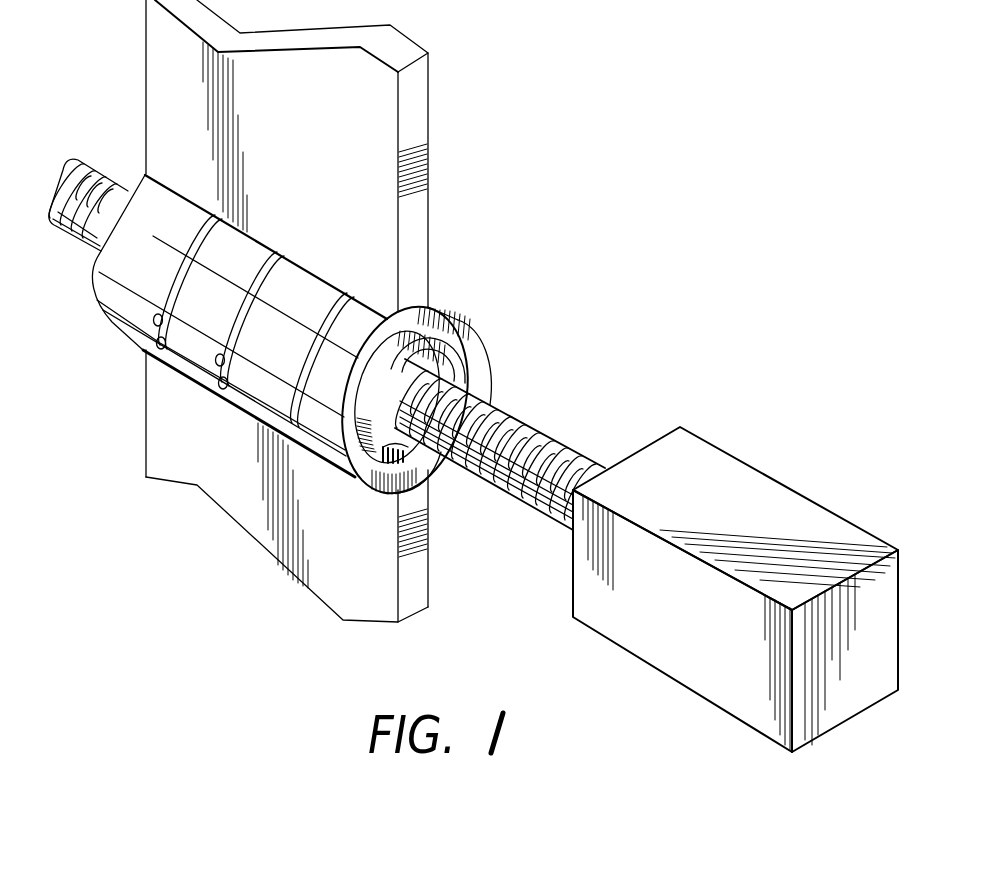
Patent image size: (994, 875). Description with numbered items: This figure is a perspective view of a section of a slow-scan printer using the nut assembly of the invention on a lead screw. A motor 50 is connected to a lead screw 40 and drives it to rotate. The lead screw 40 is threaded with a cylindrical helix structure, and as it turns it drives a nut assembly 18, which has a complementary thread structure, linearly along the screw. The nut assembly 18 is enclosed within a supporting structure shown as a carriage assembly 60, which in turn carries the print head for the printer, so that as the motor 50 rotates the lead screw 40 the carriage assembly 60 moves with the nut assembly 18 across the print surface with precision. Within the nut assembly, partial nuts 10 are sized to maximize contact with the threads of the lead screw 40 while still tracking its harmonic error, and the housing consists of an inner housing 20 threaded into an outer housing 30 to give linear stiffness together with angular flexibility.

The partial nuts 10 is at (413, 362).
The nut assembly 18 is at (486, 296).
The inner housing 20 is at (459, 357).
The outer housing 30 is at (318, 268).
The lead screw 40 is at (536, 407).
The motor 50 is at (686, 641).
The carriage assembly 60 is at (437, 130).